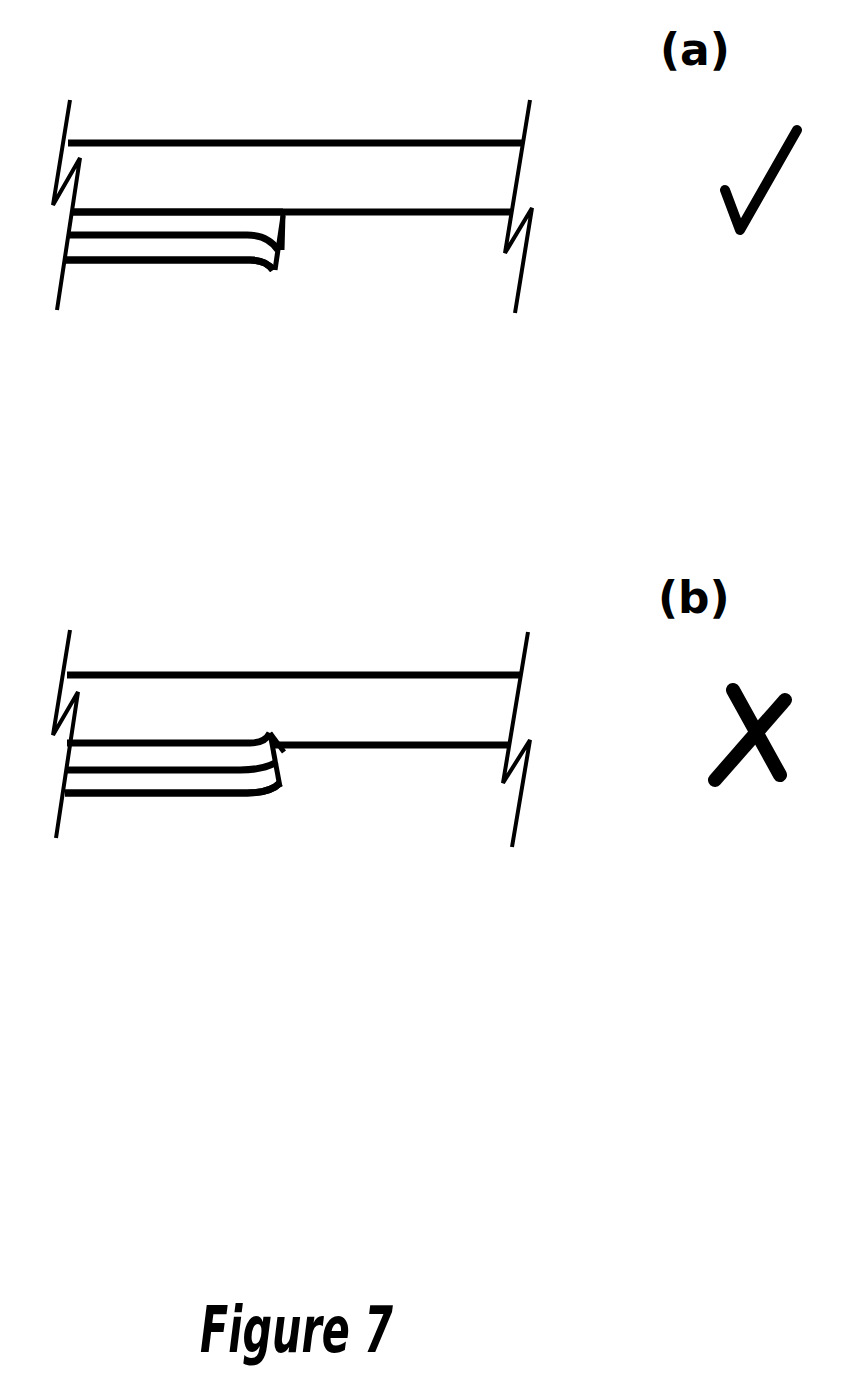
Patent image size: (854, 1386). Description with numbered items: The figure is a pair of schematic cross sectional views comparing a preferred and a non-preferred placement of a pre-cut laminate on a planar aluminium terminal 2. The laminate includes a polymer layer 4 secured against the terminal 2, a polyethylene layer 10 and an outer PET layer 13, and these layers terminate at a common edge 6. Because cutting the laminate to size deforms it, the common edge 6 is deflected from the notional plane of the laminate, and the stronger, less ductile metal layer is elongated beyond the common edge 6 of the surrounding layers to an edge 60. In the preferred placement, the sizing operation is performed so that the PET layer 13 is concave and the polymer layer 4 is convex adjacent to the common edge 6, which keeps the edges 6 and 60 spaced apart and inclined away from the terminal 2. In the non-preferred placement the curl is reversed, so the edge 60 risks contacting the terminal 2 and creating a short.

The terminal 2 is at (307, 444).
The polymer layer 4 is at (175, 426).
The common edge 6 is at (325, 568).
The polyethylene layer 10 is at (168, 596).
The PET layer 13 is at (191, 605).
The edge 60 is at (379, 542).